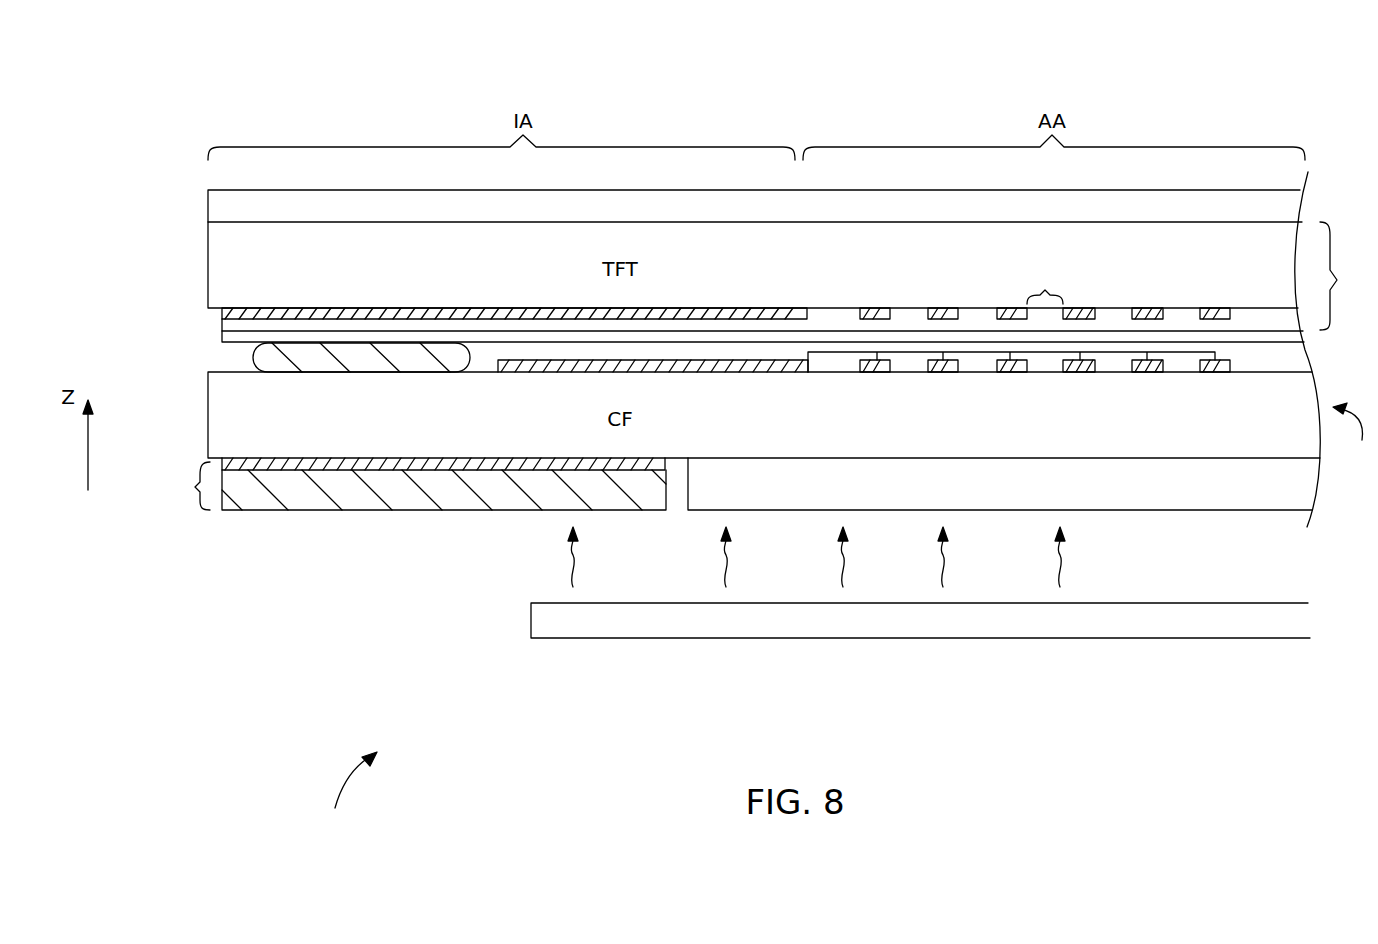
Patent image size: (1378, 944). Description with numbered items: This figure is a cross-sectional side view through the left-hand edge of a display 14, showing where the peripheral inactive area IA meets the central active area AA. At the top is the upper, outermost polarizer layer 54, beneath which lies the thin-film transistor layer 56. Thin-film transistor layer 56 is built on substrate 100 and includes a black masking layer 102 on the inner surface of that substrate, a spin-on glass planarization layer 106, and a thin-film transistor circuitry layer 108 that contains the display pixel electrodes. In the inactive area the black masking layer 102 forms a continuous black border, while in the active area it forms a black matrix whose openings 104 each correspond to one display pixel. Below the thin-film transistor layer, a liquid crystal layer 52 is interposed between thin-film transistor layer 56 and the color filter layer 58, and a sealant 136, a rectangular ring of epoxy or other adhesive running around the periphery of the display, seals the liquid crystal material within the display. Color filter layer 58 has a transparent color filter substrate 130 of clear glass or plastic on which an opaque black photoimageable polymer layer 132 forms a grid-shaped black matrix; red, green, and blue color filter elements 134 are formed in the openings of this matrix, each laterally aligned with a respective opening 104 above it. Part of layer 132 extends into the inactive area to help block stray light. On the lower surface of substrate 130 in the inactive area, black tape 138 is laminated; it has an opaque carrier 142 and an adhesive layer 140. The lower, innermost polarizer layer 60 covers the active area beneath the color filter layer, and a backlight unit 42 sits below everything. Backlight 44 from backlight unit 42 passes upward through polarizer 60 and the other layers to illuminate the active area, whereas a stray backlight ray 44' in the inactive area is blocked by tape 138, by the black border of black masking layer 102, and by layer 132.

The display 14 is at (348, 793).
The backlight unit 42 is at (622, 625).
The backlight 44 is at (893, 557).
The stray backlight ray 44' is at (608, 557).
The liquid crystal layer 52 is at (548, 350).
The upper polarizer layer 54 is at (218, 210).
The thin-film transistor layer 56 is at (1346, 276).
The color filter layer 58 is at (1353, 435).
The lower polarizer layer 60 is at (1224, 500).
The substrate 100 is at (218, 262).
The black masking layer 102 is at (222, 314).
The opening 104 is at (1045, 286).
The spin-on glass planarization layer 106 is at (222, 323).
The thin-film transistor circuitry layer 108 is at (222, 336).
The color filter substrate 130 is at (218, 418).
The black photoimageable polymer layer 132 is at (733, 372).
The color filter elements 134 is at (920, 372).
The sealant 136 is at (365, 362).
The black tape 138 is at (177, 486).
The adhesive layer 140 is at (226, 464).
The carrier 142 is at (337, 510).